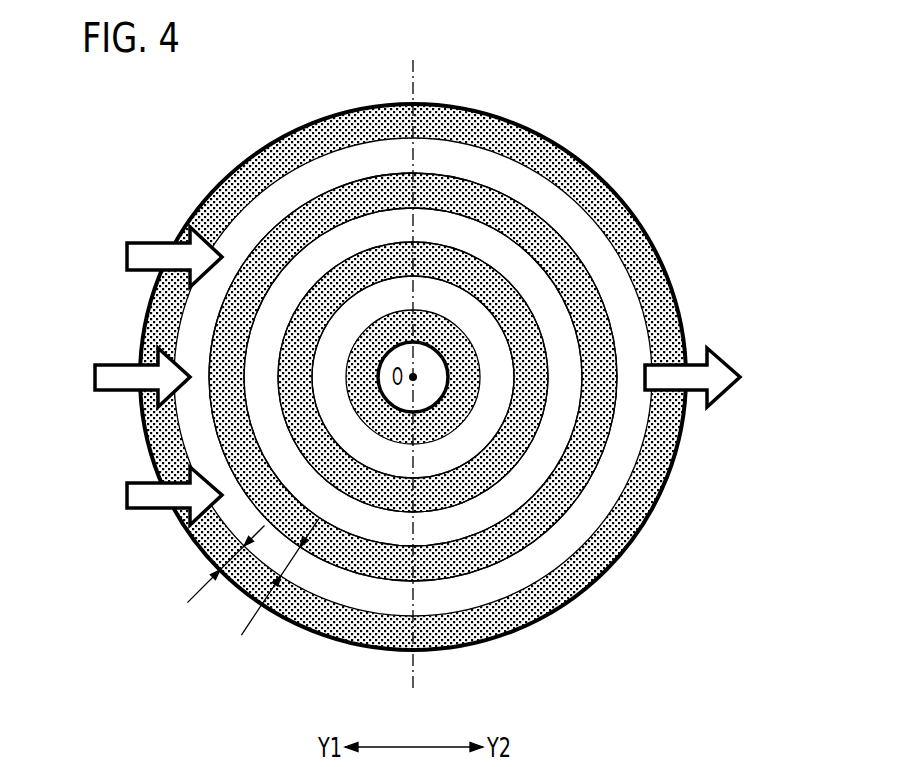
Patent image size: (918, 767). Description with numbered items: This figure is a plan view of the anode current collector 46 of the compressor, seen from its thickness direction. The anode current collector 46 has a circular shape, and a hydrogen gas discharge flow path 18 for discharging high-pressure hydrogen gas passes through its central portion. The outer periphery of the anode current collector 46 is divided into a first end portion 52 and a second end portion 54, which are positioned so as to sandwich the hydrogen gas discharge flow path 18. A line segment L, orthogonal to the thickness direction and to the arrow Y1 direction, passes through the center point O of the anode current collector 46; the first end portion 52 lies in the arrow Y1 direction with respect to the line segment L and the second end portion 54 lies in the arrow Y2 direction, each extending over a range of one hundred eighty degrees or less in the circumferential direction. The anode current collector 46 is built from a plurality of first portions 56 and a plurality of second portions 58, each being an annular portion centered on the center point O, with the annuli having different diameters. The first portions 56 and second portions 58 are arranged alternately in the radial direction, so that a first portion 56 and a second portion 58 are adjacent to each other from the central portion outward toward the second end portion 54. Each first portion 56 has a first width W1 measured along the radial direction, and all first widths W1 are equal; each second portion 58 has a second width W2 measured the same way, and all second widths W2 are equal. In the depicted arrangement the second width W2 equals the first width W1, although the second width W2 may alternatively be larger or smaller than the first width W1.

The anode current collector 46 is at (133, 113).
The first end portion 52 is at (142, 323).
The second end portion 54 is at (685, 335).
The first portion 56 is at (375, 335).
The second portion 58 is at (443, 298).
The hydrogen gas discharge flow path 18 is at (430, 375).
The line segment L is at (412, 672).
The first width W1 is at (216, 564).
The second width W2 is at (268, 577).